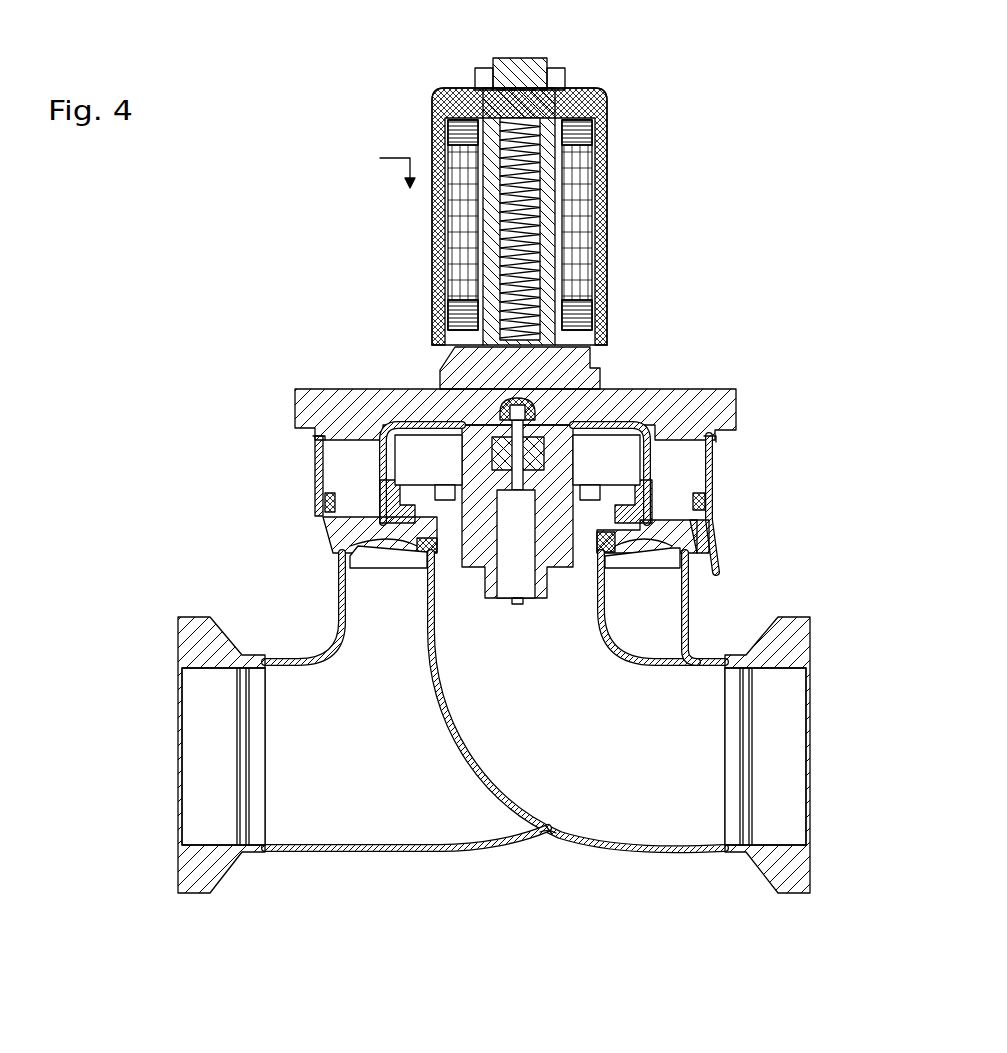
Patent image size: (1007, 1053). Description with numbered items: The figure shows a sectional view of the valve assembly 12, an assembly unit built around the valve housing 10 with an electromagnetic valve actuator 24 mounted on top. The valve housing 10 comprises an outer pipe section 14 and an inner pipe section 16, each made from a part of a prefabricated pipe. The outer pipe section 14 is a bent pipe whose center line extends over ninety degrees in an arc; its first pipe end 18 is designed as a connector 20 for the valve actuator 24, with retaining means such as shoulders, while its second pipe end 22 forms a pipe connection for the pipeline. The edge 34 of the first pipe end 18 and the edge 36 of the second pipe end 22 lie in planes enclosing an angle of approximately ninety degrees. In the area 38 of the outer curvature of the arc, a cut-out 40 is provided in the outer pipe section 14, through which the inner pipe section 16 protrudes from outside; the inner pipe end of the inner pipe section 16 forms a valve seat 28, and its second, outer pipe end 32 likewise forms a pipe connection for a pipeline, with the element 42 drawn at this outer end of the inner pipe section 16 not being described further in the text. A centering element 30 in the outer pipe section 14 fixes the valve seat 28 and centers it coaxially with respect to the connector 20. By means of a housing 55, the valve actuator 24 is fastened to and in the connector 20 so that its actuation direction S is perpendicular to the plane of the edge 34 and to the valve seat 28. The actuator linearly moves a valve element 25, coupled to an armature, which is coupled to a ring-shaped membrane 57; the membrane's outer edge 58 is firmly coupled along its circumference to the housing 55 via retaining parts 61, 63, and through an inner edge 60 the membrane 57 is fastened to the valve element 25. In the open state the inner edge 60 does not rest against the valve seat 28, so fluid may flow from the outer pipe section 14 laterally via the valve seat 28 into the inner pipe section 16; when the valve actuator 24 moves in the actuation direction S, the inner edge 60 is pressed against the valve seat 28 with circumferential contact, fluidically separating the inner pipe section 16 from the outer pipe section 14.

The valve assembly 12 is at (708, 183).
The actuation direction S is at (388, 166).
The valve actuator 24 is at (607, 162).
The valve element 25 is at (445, 410).
The connector 20 is at (600, 456).
The housing 55 is at (300, 408).
The edge of the second pipe end 36 is at (312, 443).
The retaining part 61 is at (385, 466).
The first pipe end 18 is at (720, 452).
The membrane 57 is at (703, 518).
The valve housing 10 is at (718, 560).
The retaining part 63 is at (350, 556).
The outer edge 58 is at (688, 540).
The centering element 30 is at (652, 562).
The valve seat 28 is at (430, 572).
The inner edge 60 is at (580, 583).
The edge of the first pipe end 34 is at (178, 642).
The outlet bore 42 is at (812, 662).
The second pipe end 22 is at (190, 880).
The second, outer pipe end 32 is at (800, 850).
The outer pipe section 14 is at (380, 852).
The inner pipe section 16 is at (497, 792).
The area of the outer curvature 38 is at (530, 840).
The cut-out 40 is at (548, 832).